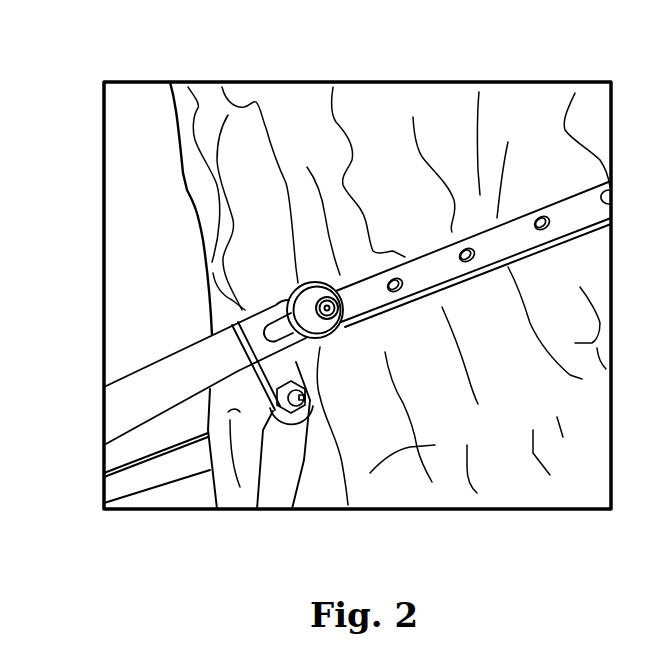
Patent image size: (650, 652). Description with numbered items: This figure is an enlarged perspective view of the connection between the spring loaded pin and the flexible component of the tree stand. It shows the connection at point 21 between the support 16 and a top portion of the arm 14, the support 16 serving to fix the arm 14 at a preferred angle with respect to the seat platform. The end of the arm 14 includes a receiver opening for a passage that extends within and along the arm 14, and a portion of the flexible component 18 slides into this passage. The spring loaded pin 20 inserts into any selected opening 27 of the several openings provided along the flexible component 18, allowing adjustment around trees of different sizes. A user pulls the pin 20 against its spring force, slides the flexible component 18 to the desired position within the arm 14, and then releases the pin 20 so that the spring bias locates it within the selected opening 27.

The arm 14 is at (132, 399).
The support 16 is at (283, 473).
The flexible component 18 is at (485, 236).
The spring loaded pin 20 is at (339, 346).
The connection point 21 is at (275, 412).
The opening 27 is at (541, 232).